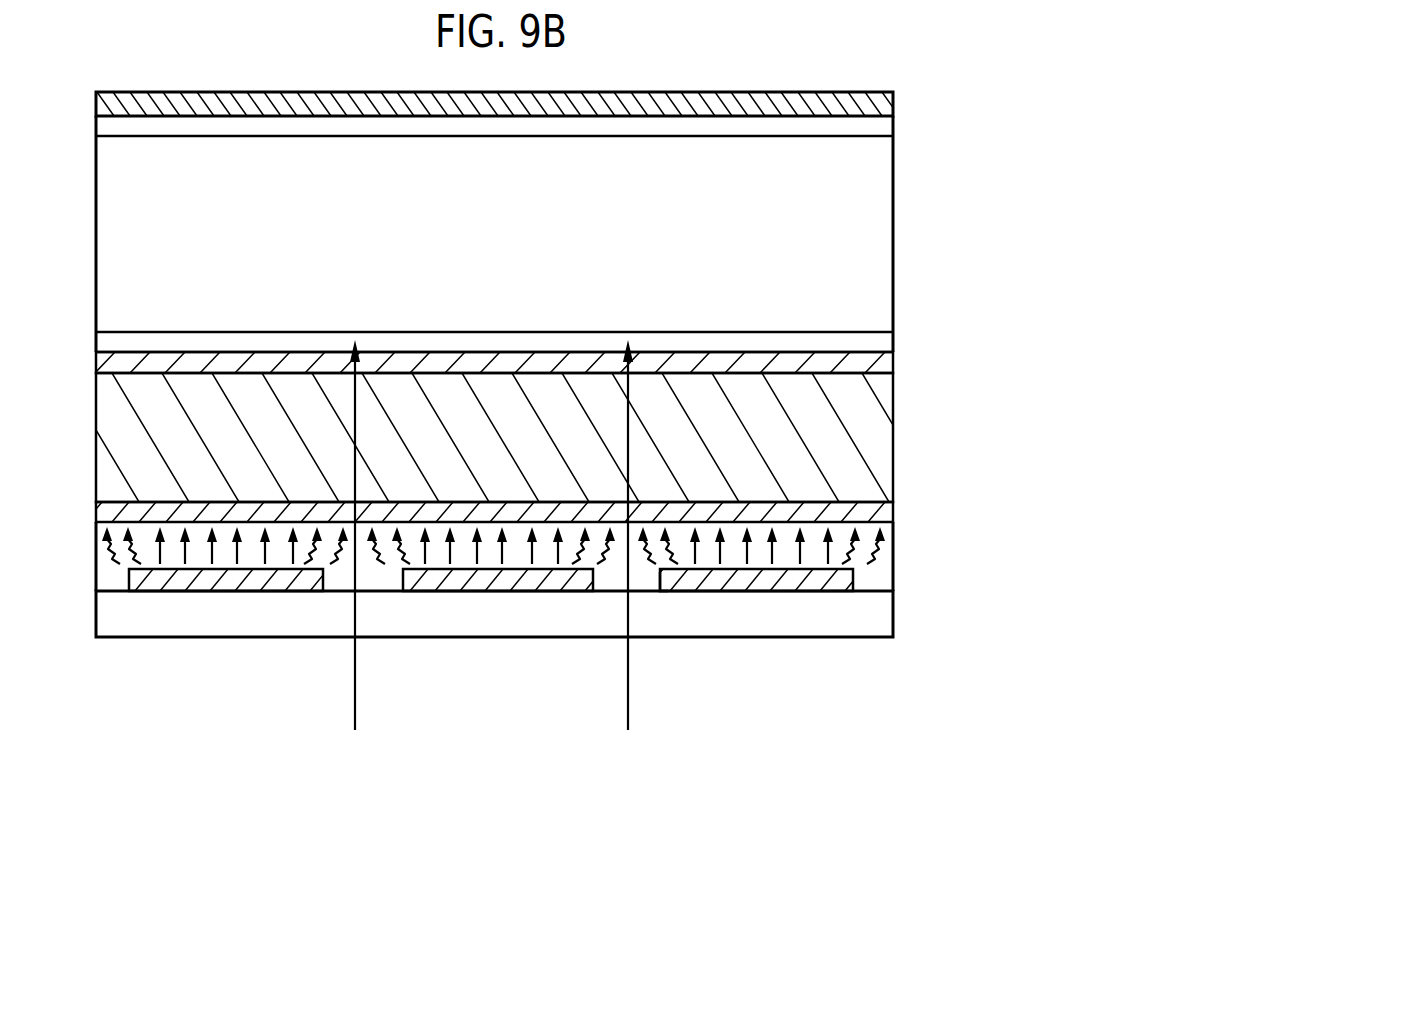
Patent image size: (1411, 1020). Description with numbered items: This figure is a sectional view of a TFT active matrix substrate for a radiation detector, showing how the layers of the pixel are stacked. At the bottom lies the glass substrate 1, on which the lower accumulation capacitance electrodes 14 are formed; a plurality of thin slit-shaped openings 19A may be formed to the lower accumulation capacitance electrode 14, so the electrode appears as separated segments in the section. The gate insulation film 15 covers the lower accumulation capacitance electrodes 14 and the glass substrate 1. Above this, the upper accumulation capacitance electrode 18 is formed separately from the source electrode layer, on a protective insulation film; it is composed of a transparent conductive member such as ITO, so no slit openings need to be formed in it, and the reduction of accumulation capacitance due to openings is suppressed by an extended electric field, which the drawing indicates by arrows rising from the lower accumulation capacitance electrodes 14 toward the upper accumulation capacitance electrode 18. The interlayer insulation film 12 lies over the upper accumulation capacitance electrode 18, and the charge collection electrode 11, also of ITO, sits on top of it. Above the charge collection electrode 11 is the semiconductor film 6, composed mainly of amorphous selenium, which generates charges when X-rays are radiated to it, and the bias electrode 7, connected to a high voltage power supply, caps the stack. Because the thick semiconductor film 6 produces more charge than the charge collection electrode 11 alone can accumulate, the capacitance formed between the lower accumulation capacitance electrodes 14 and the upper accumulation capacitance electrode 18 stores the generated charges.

The bias electrode 7 is at (880, 99).
The semiconductor film 6 is at (903, 115).
The charge collection electrode 11 is at (880, 367).
The interlayer insulation film 12 is at (857, 410).
The upper accumulation capacitance electrode 18 is at (857, 512).
The gate insulation film 15 is at (883, 562).
The lower accumulation capacitance electrode 14 is at (830, 583).
The glass substrate 1 is at (873, 618).
The slit-shaped opening 19A is at (643, 590).